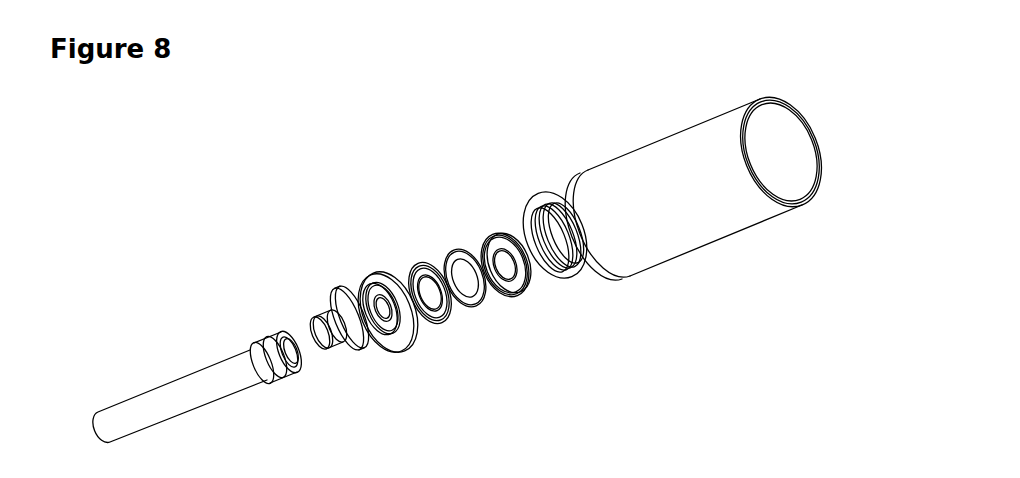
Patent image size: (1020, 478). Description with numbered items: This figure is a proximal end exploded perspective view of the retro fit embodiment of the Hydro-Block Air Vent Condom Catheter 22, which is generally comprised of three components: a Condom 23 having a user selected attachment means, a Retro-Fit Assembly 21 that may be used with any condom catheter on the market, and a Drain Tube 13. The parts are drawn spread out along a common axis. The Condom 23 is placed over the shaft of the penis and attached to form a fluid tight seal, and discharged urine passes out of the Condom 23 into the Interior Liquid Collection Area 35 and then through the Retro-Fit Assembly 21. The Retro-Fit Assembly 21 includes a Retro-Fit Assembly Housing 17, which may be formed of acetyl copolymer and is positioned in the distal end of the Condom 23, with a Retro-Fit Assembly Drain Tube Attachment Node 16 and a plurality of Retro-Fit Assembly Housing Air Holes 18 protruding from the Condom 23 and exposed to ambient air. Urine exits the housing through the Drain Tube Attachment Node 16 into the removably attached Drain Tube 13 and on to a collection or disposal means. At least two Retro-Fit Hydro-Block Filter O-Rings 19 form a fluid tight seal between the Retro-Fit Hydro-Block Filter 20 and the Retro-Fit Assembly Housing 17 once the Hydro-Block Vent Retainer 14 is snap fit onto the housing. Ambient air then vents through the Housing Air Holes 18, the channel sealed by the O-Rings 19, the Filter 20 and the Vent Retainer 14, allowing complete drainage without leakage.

The drain tube 13 is at (170, 397).
The hydro-block vent retainer 14 is at (532, 283).
The retro-fit assembly drain tube attachment node 16 is at (327, 350).
The retro-fit assembly housing 17 is at (372, 342).
The retro-fit assembly housing air holes 18 is at (381, 309).
The retro-fit hydro-block filter O-rings 19 is at (445, 307).
The retro-fit hydro-block filter 20 is at (483, 302).
The retro-fit assembly 21 is at (518, 222).
The retro fit embodiment hydro-block air vent condom catheter 22 is at (837, 320).
The condom 23 is at (690, 197).
The interior liquid collection area 35 is at (562, 205).